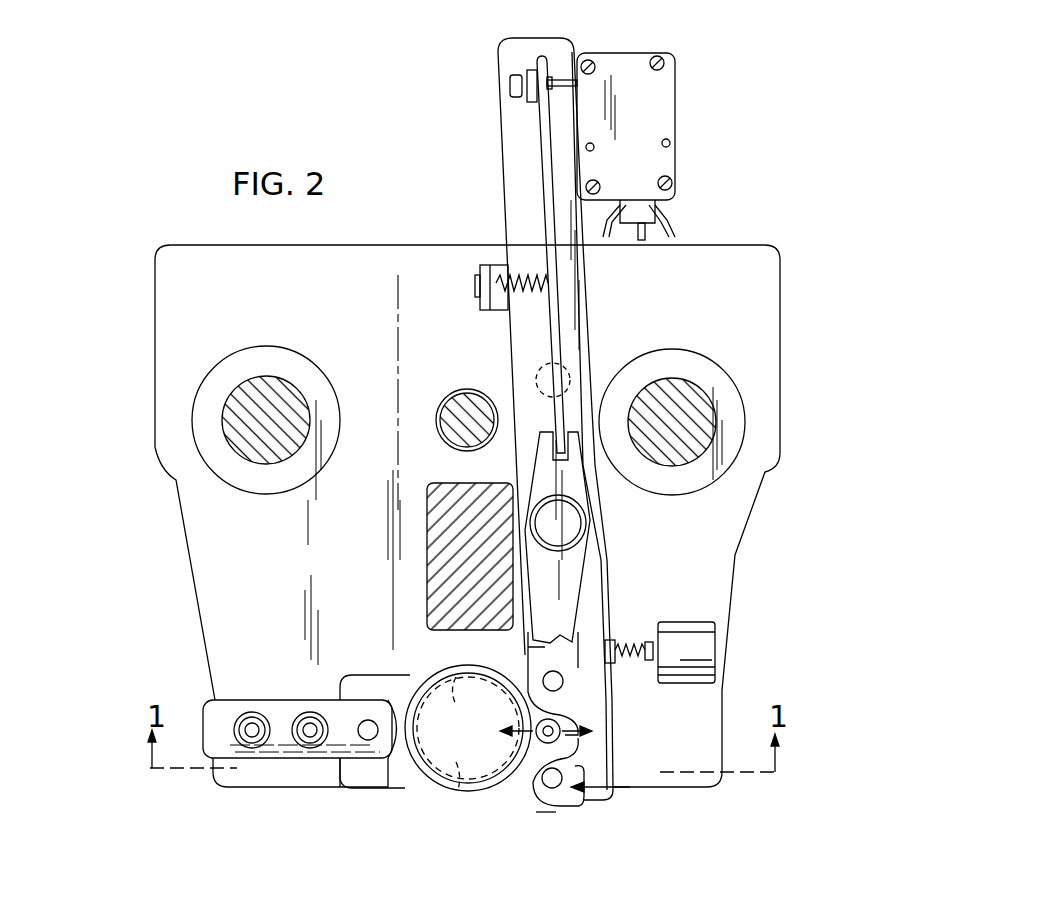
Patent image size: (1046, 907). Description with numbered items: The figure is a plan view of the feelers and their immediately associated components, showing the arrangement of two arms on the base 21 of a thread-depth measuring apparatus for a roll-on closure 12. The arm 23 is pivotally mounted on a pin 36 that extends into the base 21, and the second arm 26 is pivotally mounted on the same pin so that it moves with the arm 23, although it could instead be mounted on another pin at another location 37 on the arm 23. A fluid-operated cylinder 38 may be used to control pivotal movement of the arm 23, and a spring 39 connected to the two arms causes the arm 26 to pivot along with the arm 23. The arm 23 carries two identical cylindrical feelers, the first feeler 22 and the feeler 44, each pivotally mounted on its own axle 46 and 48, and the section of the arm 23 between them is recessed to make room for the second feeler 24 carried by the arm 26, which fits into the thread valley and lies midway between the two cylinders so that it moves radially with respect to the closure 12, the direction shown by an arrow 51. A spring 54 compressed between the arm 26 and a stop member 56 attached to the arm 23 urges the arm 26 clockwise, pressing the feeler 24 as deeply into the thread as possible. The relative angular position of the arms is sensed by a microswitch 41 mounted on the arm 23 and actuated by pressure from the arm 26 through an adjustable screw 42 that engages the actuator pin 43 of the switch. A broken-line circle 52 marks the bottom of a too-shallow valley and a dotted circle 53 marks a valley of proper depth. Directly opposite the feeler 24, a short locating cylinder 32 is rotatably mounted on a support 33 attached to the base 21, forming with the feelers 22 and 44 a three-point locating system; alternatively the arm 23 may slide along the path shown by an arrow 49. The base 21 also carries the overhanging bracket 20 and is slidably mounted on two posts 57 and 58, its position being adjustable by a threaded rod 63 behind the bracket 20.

The roll-on closure 12 is at (420, 787).
The overhanging bracket 20 is at (427, 574).
The base 21 is at (748, 512).
The first feeler 22 is at (552, 712).
The arm 23 is at (600, 742).
The second feeler 24 is at (534, 720).
The second arm 26 is at (582, 568).
The short cylinder 32 is at (362, 760).
The support 33 is at (207, 700).
The pin 36 is at (584, 545).
The another location 37 is at (567, 378).
The fluid-operated cylinder 38 is at (690, 642).
The spring 39 is at (624, 645).
The microswitch 41 is at (677, 107).
The adjustable screw 42 is at (508, 96).
The actuator pin 43 is at (575, 80).
The cylindrical feeler 44 is at (545, 812).
The axle 46 is at (545, 672).
The axle 48 is at (573, 799).
The arrow 49 is at (586, 774).
The arrow 51 is at (512, 748).
The broken-line circle 52 is at (468, 728).
The dotted circle 53 is at (468, 728).
The spring 54 is at (533, 262).
The stop member 56 is at (484, 308).
The post 57 is at (722, 397).
The post 58 is at (302, 393).
The threaded rod 63 is at (468, 389).